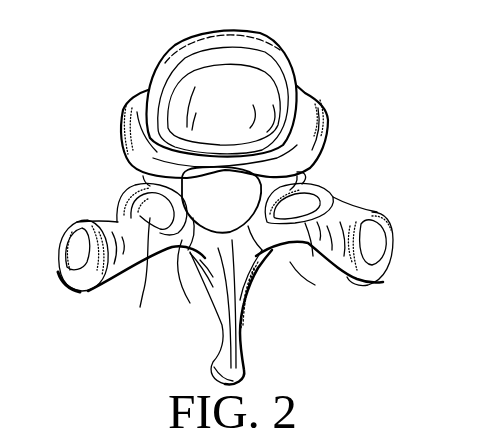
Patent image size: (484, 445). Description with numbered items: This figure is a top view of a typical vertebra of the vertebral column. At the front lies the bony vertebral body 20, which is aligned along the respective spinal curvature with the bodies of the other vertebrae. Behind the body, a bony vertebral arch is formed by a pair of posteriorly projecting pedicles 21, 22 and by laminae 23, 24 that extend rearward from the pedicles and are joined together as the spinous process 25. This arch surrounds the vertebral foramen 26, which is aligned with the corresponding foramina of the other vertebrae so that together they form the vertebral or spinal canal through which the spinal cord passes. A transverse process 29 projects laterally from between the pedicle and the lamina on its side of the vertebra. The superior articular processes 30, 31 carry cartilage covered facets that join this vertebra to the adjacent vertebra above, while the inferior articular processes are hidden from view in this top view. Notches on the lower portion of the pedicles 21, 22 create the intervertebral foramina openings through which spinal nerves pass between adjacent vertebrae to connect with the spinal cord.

The vertebral body 20 is at (197, 83).
The pedicle 21 is at (123, 184).
The pedicle 22 is at (318, 174).
The lamina 23 is at (197, 238).
The lamina 24 is at (287, 244).
The spinous process 25 is at (241, 327).
The vertebral foramen 26 is at (212, 188).
The transverse process 29 is at (343, 201).
The superior articular process 30 is at (162, 250).
The superior articular process 31 is at (313, 257).